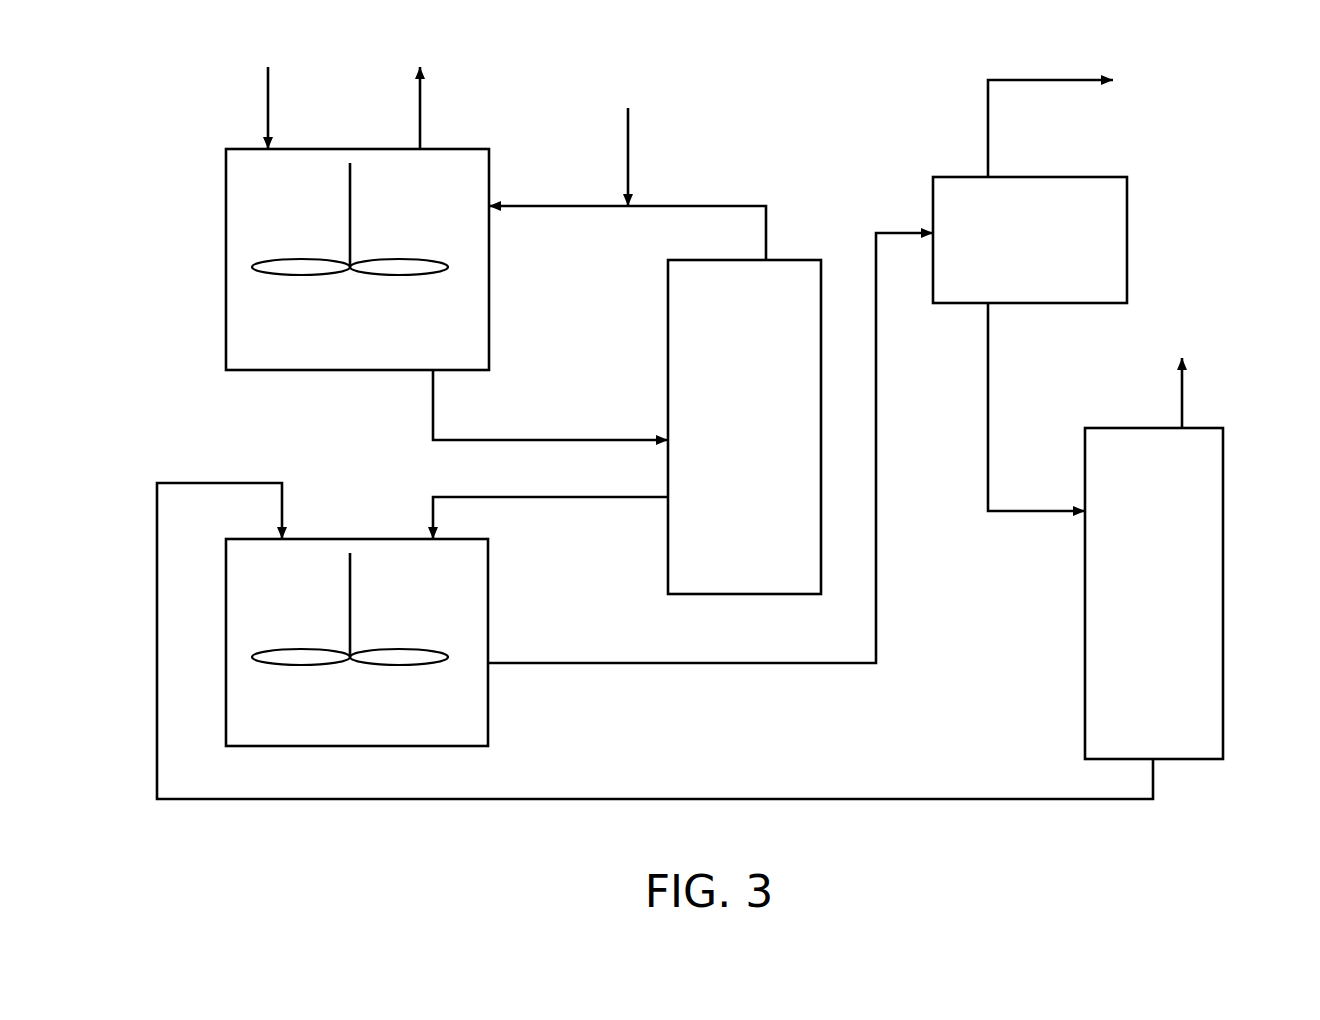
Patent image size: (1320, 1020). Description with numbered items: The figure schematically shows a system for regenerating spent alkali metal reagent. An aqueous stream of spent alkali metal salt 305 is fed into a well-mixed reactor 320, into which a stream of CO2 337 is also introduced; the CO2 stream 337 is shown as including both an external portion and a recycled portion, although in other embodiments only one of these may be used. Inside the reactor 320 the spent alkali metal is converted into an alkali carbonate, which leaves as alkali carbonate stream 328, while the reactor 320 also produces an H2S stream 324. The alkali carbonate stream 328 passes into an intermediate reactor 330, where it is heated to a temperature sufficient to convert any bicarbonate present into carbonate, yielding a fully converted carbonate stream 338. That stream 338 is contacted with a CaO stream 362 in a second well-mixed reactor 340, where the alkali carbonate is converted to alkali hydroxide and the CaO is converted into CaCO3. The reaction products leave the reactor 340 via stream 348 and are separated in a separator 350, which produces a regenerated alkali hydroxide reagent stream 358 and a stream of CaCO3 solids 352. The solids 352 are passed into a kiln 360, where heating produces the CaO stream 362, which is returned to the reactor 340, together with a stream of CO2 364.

The aqueous stream of spent alkali metal salt 305 is at (295, 95).
The H2S stream 324 is at (448, 95).
The well-mixed reactor 320 is at (326, 346).
The CO2 stream 337 is at (655, 135).
The alkali carbonate stream 328 is at (545, 427).
The intermediate reactor 330 is at (716, 445).
The fully converted carbonate stream 338 is at (516, 510).
The well-mixed reactor 340 is at (326, 723).
The reaction product stream 348 is at (889, 580).
The separator 350 is at (1006, 252).
The regenerated alkali hydroxide reagent stream 358 is at (975, 122).
The stream of CaCO3 solids 352 is at (1016, 413).
The kiln 360 is at (1129, 612).
The CO2 stream 364 is at (1209, 385).
The CaO stream 362 is at (698, 787).